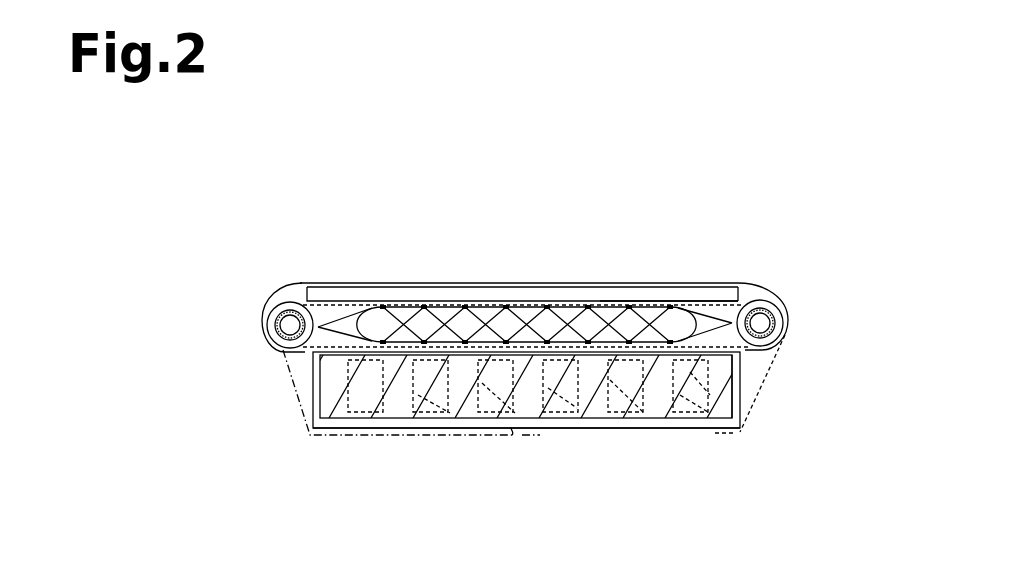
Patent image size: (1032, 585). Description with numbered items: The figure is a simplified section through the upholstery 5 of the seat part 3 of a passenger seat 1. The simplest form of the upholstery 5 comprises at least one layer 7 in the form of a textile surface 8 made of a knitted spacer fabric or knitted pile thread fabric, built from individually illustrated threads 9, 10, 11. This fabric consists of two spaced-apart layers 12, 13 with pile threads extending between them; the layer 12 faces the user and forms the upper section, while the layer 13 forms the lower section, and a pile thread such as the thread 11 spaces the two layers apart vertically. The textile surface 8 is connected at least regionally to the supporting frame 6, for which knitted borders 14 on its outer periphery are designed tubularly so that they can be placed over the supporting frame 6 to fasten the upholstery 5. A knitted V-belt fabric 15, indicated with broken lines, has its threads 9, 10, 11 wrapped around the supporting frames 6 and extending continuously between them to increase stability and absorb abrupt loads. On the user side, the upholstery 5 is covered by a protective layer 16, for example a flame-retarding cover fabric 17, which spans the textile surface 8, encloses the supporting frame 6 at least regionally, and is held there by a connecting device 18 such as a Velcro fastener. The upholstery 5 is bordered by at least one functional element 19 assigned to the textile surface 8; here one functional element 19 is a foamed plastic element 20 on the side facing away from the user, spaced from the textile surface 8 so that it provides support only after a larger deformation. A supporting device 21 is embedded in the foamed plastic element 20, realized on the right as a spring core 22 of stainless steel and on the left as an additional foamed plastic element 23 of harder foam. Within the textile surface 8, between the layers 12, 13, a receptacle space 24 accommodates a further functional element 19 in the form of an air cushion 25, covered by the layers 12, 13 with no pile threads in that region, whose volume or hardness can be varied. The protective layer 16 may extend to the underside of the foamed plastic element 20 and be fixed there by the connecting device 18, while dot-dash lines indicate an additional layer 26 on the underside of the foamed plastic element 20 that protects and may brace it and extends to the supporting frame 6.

The passenger seat 1 is at (784, 124).
The seat part 3 is at (820, 183).
The upholstery 5 is at (573, 316).
The supporting frame 6 is at (291, 325).
The layer 7 is at (707, 293).
The textile surface 8 is at (455, 300).
The thread 9 is at (470, 300).
The thread 10 is at (462, 344).
The thread 11 is at (650, 330).
The layer 12 is at (385, 300).
The layer 13 is at (418, 347).
The knitted border 14 is at (312, 300).
The V-belt fabric 15 is at (738, 300).
The protective layer 16 is at (423, 284).
The cover fabric 17 is at (570, 284).
The connecting device 18 is at (770, 360).
The functional element 19 is at (313, 300).
The foamed plastic element 20 is at (707, 293).
The supporting device 21 is at (745, 398).
The spring core 22 is at (555, 417).
The additional foamed plastic element 23 is at (360, 365).
The receptacle space 24 is at (702, 322).
The air cushion 25 is at (647, 290).
The additional layer 26 is at (292, 386).